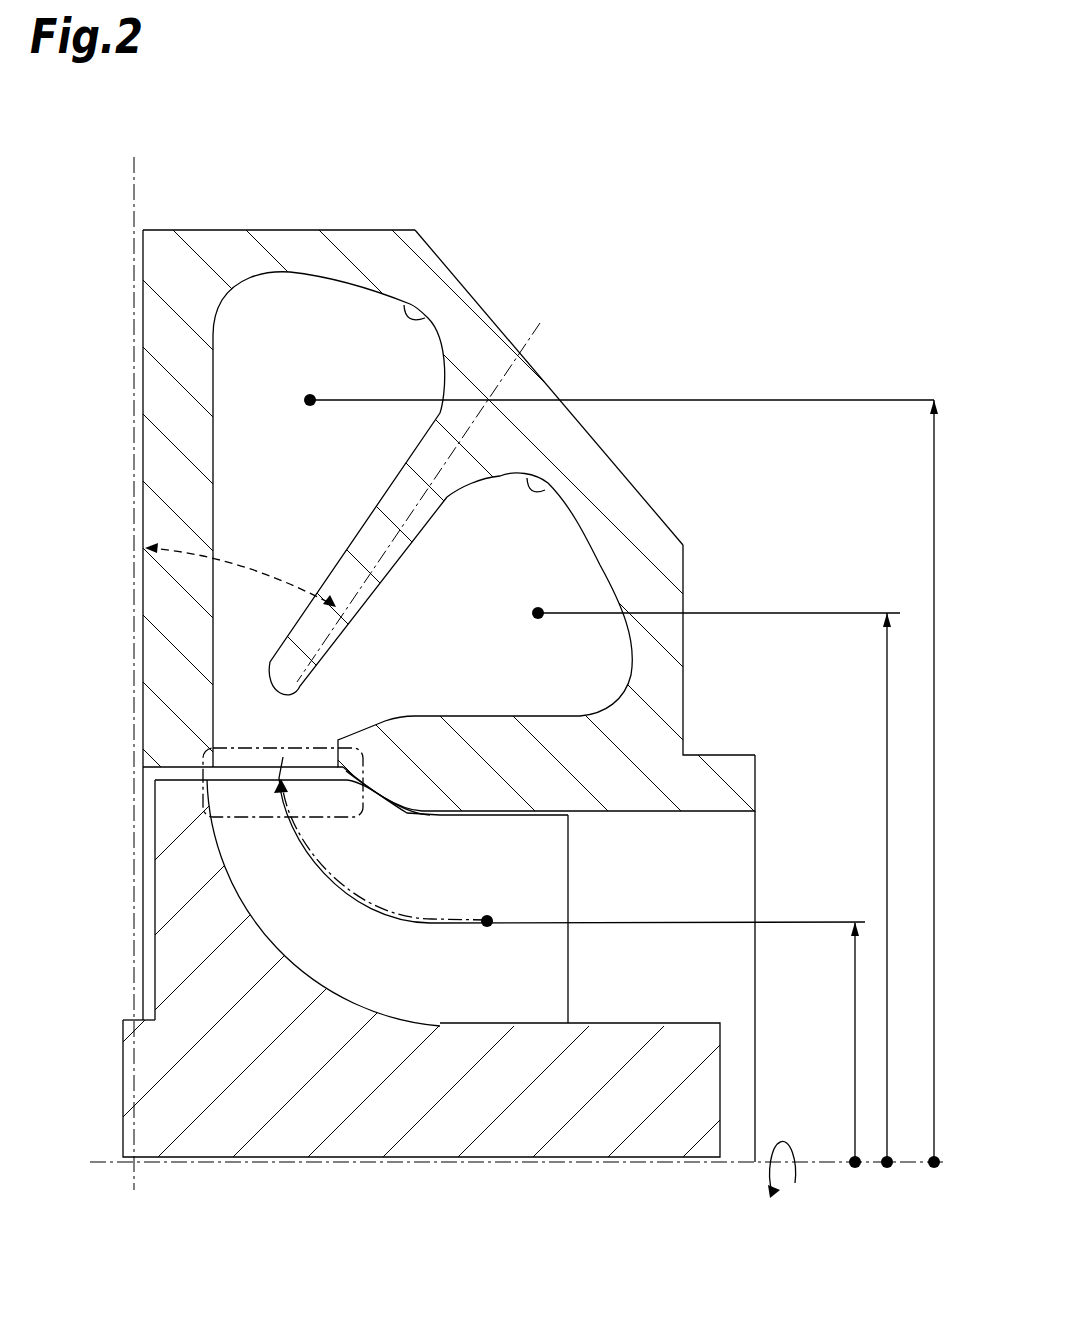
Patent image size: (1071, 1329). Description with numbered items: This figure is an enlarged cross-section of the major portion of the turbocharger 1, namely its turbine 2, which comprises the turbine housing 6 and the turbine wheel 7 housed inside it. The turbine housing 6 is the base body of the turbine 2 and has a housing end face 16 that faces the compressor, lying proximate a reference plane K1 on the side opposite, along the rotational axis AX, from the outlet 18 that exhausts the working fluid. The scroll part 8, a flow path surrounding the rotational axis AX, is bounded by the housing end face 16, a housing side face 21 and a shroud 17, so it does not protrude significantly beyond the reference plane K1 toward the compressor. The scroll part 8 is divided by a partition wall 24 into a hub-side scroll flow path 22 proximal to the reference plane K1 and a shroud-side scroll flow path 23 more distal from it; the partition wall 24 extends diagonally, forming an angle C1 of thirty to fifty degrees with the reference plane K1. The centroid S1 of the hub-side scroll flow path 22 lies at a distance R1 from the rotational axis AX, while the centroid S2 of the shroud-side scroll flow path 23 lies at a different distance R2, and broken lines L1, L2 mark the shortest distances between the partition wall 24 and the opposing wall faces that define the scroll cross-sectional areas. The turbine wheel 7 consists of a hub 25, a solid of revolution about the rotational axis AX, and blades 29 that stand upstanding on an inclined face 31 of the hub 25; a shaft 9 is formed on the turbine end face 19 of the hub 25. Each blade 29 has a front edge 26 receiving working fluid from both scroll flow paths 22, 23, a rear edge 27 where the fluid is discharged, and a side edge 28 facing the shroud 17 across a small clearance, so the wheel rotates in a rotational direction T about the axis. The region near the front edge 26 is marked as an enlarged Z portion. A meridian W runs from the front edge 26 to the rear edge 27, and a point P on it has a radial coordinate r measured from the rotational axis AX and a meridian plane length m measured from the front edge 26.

The turbocharger 1 is at (699, 219).
The turbine 2 is at (305, 224).
The turbine housing 6 is at (722, 753).
The turbine wheel 7 is at (728, 1097).
The scroll part 8 is at (463, 518).
The shaft 9 is at (130, 1003).
The housing end face 16 is at (143, 266).
The shroud 17 is at (385, 725).
The outlet 18 is at (730, 812).
The turbine end face 19 is at (150, 868).
The housing side face 21 is at (437, 257).
The hub-side scroll flow path 22 is at (415, 306).
The shroud-side scroll flow path 23 is at (535, 486).
The partition wall 24 is at (372, 497).
The hub 25 is at (304, 1084).
The front edge 26 is at (337, 758).
The rear edge 27 is at (570, 900).
The side edge 28 is at (350, 768).
The blades 29 is at (470, 887).
The inclined face 31 is at (352, 998).
The reference plane K1 is at (133, 172).
The centroid of the hub-side scroll flow path S1 is at (310, 394).
The centroid of the shroud-side scroll flow path S2 is at (538, 620).
The angle C1 is at (268, 575).
The broken line L1 is at (243, 685).
The broken line L2 is at (347, 733).
The Z portion Z is at (207, 808).
The distance R1 is at (934, 530).
The distance R2 is at (887, 830).
The meridian plane length m is at (438, 926).
The point P is at (487, 928).
The meridian W is at (520, 924).
The radial coordinate r is at (855, 1040).
The rotational direction T is at (797, 1157).
The rotational axis AX is at (92, 1160).